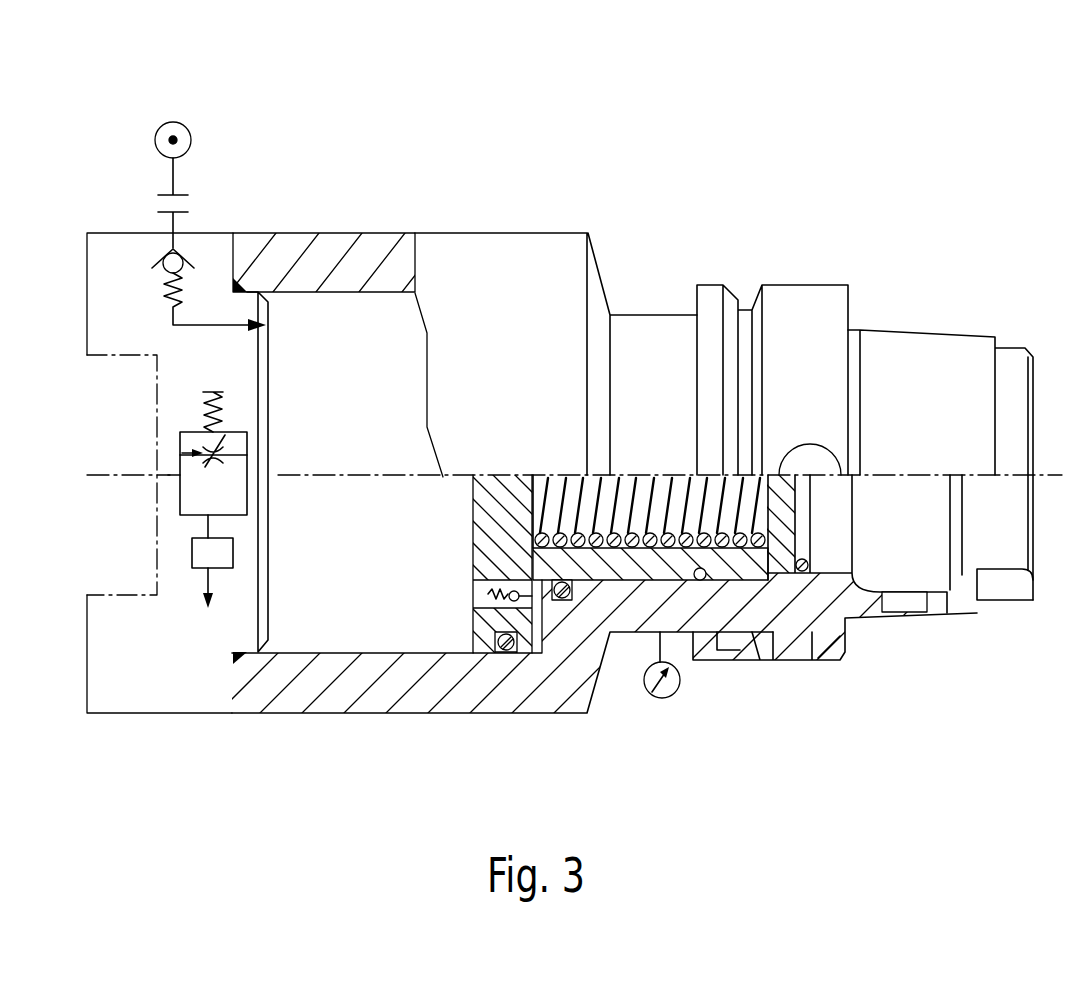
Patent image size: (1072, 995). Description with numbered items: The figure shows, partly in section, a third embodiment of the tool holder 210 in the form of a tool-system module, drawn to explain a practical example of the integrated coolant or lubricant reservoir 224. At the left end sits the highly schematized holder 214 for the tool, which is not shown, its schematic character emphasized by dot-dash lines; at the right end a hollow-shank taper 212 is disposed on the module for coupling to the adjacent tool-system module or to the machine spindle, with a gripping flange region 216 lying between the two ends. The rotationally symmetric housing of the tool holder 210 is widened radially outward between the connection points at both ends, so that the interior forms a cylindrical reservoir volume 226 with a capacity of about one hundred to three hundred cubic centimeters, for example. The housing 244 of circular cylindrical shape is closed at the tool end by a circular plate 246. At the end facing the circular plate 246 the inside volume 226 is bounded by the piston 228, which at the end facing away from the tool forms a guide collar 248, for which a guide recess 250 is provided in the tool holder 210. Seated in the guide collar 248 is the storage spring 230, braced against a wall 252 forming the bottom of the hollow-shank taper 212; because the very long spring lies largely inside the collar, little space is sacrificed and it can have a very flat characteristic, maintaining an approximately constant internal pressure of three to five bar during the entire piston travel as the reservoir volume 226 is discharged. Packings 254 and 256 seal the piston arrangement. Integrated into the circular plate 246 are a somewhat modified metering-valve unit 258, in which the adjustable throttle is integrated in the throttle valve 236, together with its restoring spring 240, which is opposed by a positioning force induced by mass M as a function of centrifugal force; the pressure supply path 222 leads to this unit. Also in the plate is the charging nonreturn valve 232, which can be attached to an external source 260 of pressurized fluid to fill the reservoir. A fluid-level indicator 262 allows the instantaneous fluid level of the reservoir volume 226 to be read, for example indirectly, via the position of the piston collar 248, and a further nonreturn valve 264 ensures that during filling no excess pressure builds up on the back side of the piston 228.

The tool holder 210 is at (552, 208).
The hollow-shank taper 212 is at (912, 348).
The holder for the tool 214 is at (130, 365).
The gripping flange 216 is at (749, 278).
The pressure supply 222 is at (168, 478).
The coolant or lubricant reservoir 224 is at (448, 308).
The reservoir volume 226 is at (312, 318).
The piston 228 is at (495, 510).
The storage spring 230 is at (757, 540).
The charging nonreturn valve 232 is at (178, 258).
The pressure regulator 236 is at (227, 467).
The restoring spring 240 is at (217, 402).
The housing 244 is at (368, 687).
The circular plate 246 is at (102, 252).
The guide collar 248 is at (627, 567).
The guide recess 250 is at (707, 557).
The wall 252 is at (783, 526).
The packing 254 is at (503, 645).
The packing 256 is at (560, 600).
The metering-valve unit 258 is at (185, 502).
The external source of pressurized fluid 260 is at (178, 110).
The fluid-level indicator 262 is at (668, 700).
The further nonreturn valve 264 is at (500, 590).